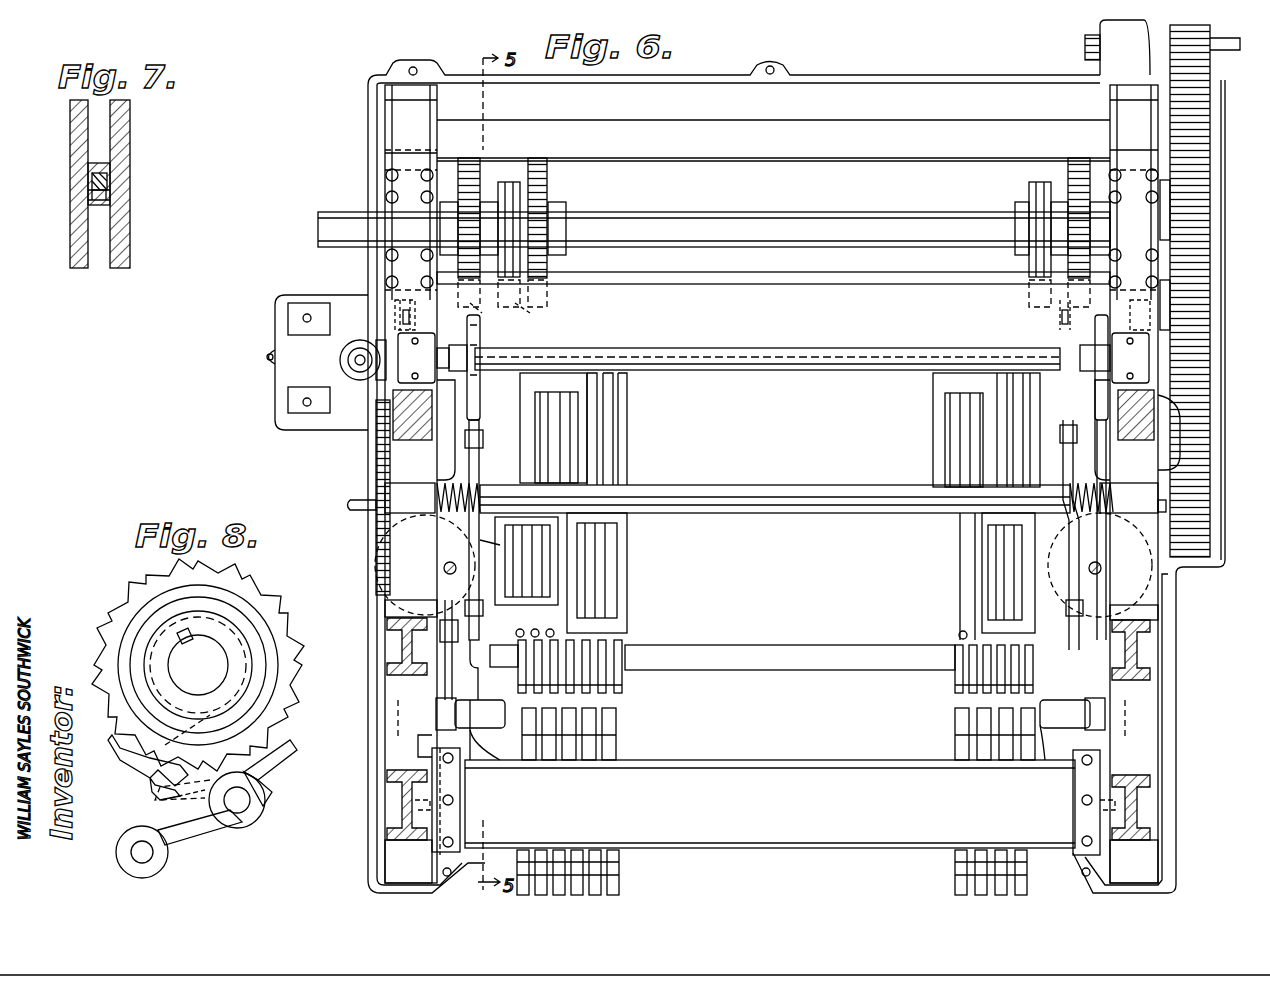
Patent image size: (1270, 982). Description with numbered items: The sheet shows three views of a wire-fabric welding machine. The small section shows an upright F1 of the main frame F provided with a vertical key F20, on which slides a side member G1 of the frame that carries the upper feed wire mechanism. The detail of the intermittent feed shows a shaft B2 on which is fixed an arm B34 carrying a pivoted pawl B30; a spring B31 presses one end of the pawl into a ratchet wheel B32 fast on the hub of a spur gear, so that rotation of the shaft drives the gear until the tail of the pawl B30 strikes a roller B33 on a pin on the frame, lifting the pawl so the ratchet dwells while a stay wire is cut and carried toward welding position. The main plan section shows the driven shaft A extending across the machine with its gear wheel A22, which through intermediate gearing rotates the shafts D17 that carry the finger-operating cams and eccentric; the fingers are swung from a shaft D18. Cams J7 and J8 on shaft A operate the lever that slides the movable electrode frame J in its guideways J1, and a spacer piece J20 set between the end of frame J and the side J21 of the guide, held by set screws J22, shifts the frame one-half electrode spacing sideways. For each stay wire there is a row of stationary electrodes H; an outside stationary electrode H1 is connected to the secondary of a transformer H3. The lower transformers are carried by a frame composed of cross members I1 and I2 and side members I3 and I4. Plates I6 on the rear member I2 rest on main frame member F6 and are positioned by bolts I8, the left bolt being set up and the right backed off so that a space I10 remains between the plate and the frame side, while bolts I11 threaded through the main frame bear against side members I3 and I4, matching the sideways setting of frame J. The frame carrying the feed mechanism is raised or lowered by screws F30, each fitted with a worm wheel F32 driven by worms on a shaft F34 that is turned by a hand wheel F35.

In FIG. 7, the upright F1 is at (122, 152).
In FIG. 7, the vertical key F20 is at (107, 187).
In FIG. 7, the side member G1 is at (88, 190).
In FIG. 8, the shaft B2 is at (207, 650).
In FIG. 8, the pawl B30 is at (286, 762).
In FIG. 8, the spring B31 is at (158, 808).
In FIG. 8, the ratchet wheel B32 is at (115, 745).
In FIG. 8, the roller B33 is at (168, 858).
In FIG. 8, the arm B34 is at (244, 826).
In FIG. 6, the main frame F is at (753, 456).
In FIG. 6, the main shaft A is at (680, 214).
In FIG. 6, the gear wheel A22 is at (548, 190).
In FIG. 6, the space I10 is at (430, 300).
In FIG. 6, the rear frame member I2 is at (707, 292).
In FIG. 6, the plate I6 is at (418, 300).
In FIG. 6, the bolt I8 is at (345, 300).
In FIG. 6, the cam J8 is at (484, 312).
In FIG. 6, the cam J7 is at (516, 304).
In FIG. 6, the main frame member F6 is at (398, 333).
In FIG. 6, the shaft D17 is at (752, 372).
In FIG. 6, the hand wheel F35 is at (378, 465).
In FIG. 6, the shaft F34 is at (400, 490).
In FIG. 6, the worm wheel F32 is at (405, 528).
In FIG. 6, the bolt I11 is at (360, 505).
In FIG. 6, the screw F30 is at (450, 575).
In FIG. 6, the side member I3 is at (475, 590).
In FIG. 6, the side member I4 is at (1073, 535).
In FIG. 6, the stationary electrodes H is at (620, 648).
In FIG. 6, the stationary electrode H1 is at (516, 645).
In FIG. 6, the transformer H3 is at (480, 540).
In FIG. 6, the front frame member I1 is at (712, 665).
In FIG. 6, the movable frame J is at (682, 786).
In FIG. 6, the guideways J1 is at (458, 832).
In FIG. 6, the spacer piece J20 is at (445, 797).
In FIG. 6, the set screw J22 is at (440, 813).
In FIG. 6, the side J21 is at (428, 756).
In FIG. 6, the shaft D18 is at (490, 730).